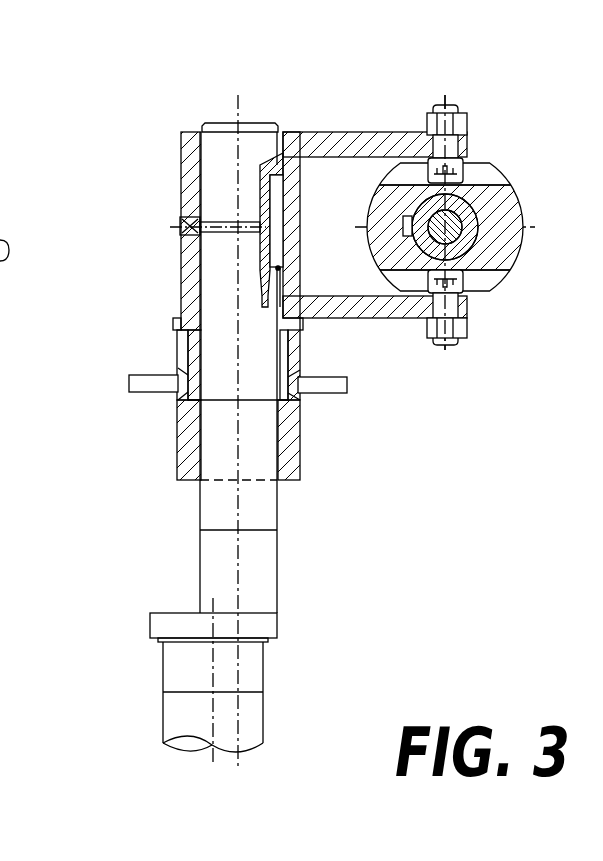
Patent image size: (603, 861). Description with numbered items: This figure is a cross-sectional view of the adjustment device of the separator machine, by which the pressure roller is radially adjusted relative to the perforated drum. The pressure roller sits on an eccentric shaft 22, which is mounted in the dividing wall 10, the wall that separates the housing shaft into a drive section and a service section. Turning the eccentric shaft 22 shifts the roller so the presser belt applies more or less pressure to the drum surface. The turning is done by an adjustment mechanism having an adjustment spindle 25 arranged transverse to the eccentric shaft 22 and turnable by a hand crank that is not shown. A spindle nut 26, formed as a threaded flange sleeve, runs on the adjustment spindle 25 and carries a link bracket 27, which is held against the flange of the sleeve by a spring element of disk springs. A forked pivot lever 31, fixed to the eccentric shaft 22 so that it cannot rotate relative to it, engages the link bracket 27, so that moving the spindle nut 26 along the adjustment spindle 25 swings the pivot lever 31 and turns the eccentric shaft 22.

The dividing wall 10 is at (333, 385).
The eccentric shaft 22 is at (263, 580).
The adjustment spindle 25 is at (478, 190).
The spindle nut 26 is at (480, 245).
The link bracket 27 is at (517, 193).
The forked pivot lever 31 is at (342, 134).